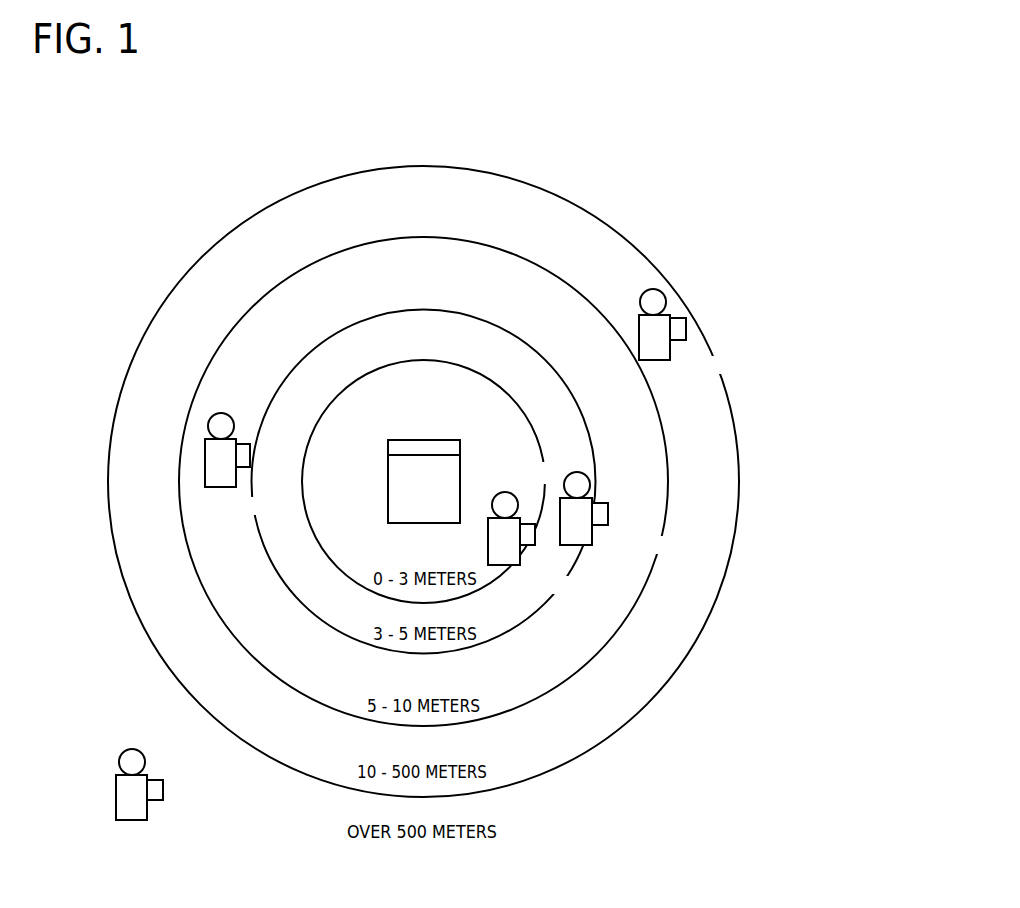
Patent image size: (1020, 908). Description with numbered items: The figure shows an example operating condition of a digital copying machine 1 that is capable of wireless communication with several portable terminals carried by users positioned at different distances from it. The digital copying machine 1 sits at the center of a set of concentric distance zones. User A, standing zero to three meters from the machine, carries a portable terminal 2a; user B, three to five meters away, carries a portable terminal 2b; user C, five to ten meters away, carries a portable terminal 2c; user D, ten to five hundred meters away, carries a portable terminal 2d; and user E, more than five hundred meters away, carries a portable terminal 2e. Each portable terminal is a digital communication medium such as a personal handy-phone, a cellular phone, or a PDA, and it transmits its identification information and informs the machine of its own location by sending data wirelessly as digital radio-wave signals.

The digital copying machine 1 is at (425, 438).
The portable terminal 2a is at (527, 522).
The portable terminal 2b is at (600, 498).
The portable terminal 2c is at (242, 442).
The portable terminal 2d is at (680, 317).
The portable terminal 2e is at (157, 778).